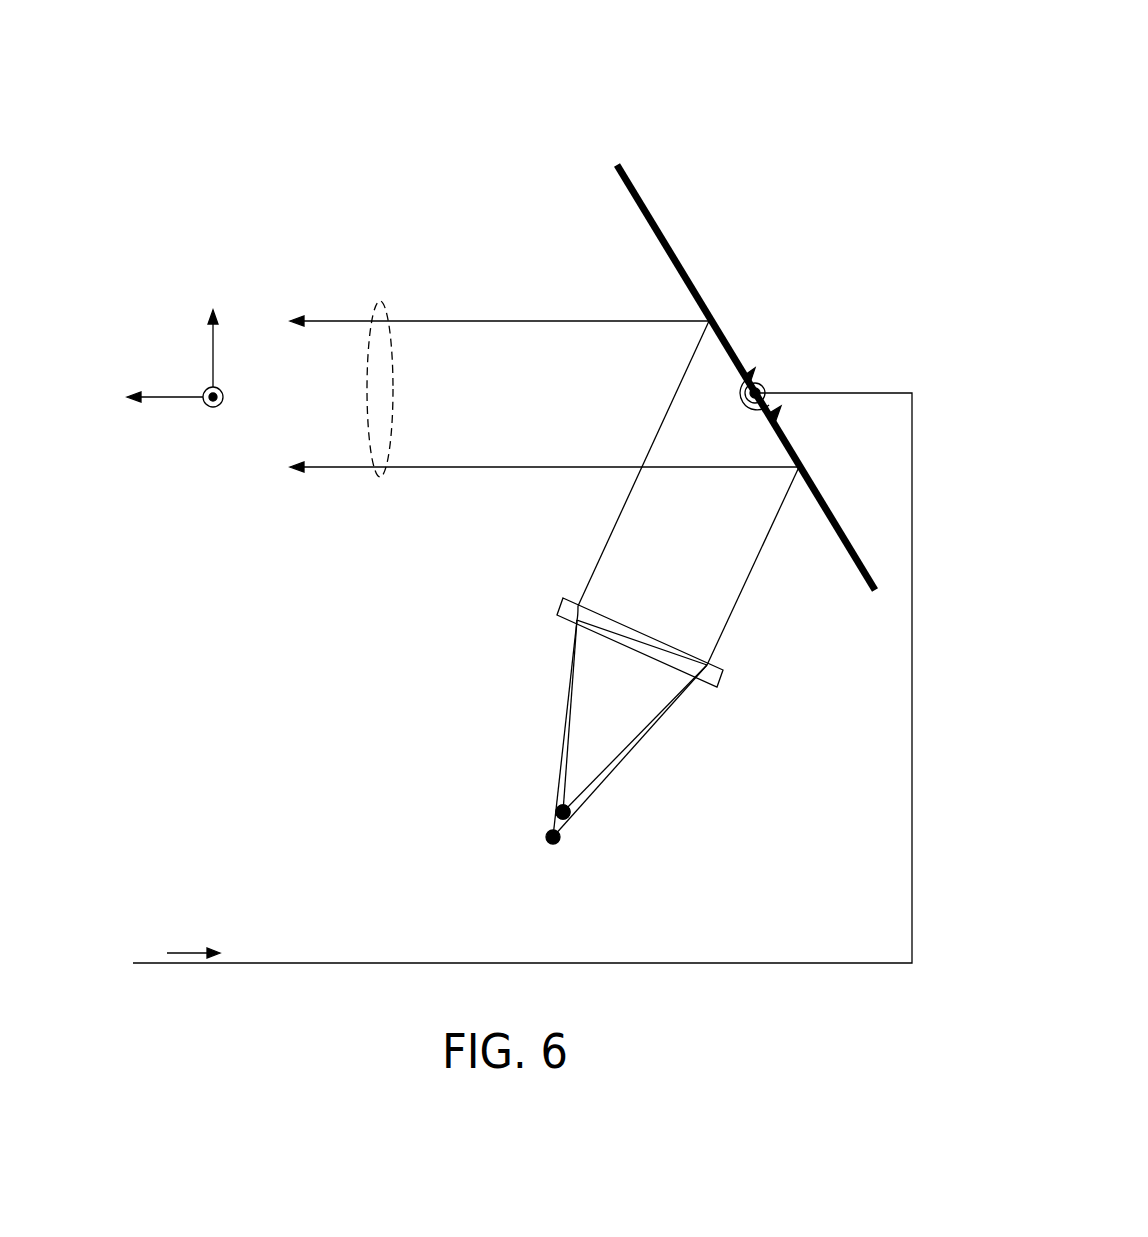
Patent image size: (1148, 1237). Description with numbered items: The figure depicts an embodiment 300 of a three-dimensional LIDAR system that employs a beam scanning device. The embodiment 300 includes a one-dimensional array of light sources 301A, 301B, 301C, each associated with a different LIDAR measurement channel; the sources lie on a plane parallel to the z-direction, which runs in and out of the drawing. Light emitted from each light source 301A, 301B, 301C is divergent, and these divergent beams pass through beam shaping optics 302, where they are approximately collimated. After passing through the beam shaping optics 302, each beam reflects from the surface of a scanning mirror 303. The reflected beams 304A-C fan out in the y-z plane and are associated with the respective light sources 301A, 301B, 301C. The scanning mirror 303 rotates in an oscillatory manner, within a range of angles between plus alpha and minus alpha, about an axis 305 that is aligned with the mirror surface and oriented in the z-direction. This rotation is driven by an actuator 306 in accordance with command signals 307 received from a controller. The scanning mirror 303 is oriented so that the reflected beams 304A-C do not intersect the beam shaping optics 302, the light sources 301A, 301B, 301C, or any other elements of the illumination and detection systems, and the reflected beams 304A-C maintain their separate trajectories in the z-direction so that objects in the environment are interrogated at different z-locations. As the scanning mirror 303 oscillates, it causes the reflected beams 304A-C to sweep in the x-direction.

The embodiment of a 3-D LIDAR system 300 is at (214, 68).
The light source 301A is at (556, 811).
The light source 301B is at (549, 843).
The light source 301C is at (571, 813).
The beam shaping optics 302 is at (725, 680).
The scanning mirror 303 is at (690, 278).
The reflected beams 304A-C is at (367, 373).
The axis 305 is at (765, 384).
The actuator 306 is at (763, 392).
The command signals 307 is at (190, 952).